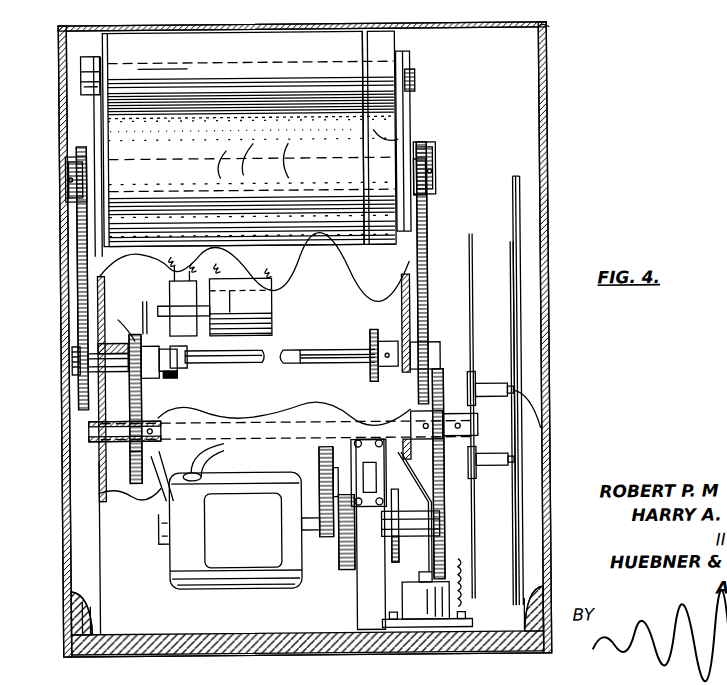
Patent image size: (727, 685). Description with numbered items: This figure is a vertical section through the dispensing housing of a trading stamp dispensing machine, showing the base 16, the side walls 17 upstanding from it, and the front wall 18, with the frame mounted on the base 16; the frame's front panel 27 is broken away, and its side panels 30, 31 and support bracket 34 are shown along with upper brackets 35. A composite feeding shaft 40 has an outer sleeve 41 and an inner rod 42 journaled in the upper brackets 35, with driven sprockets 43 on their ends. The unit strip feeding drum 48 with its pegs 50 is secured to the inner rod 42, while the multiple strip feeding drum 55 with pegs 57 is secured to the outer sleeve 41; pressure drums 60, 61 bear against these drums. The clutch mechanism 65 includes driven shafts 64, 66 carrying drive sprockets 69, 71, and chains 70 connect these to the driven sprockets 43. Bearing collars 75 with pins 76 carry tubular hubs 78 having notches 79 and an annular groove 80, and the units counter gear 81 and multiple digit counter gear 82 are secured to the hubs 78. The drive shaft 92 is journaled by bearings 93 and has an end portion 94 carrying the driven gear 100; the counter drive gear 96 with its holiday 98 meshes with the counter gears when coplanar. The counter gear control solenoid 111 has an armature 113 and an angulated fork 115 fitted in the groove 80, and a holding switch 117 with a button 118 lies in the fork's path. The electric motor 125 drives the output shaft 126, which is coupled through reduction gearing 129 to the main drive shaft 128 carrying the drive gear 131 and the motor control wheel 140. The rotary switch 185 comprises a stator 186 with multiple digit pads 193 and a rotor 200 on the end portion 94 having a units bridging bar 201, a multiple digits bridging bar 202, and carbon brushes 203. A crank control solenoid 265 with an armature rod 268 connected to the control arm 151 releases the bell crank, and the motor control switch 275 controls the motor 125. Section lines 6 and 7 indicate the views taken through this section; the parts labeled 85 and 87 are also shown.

The section line 6 is at (150, 286).
The section line 7 is at (410, 447).
The base 16 is at (158, 638).
The side walls 17 is at (61, 220).
The front wall 18 is at (548, 24).
The front panel 27 is at (119, 547).
The side panel 30 is at (410, 300).
The side panel 31 is at (98, 408).
The support bracket 34 is at (372, 593).
The upper brackets 35 is at (105, 112).
The composite feeding shaft 40 is at (440, 165).
The outer sleeve 41 is at (152, 170).
The inner rod 42 is at (188, 168).
The driven sprockets 43 is at (64, 183).
The unit strip feeding drum 48 is at (400, 112).
The pegs 50 is at (402, 135).
The multiple strip feeding drum 55 is at (115, 134).
The pegs 57 is at (253, 166).
The pressure drum 60 is at (392, 42).
The pressure drum 61 is at (120, 45).
The driven shaft 64 is at (262, 362).
The clutch mechanism 65 is at (128, 320).
The driven shaft 66 is at (305, 350).
The drive sprocket 69 is at (435, 343).
The chains 70 is at (78, 265).
The drive sprocket 71 is at (72, 367).
The bearing collars 75 is at (236, 362).
The pins 76 is at (190, 366).
The tubular hubs 78 is at (148, 333).
The notches 79 is at (172, 372).
The annular groove 80 is at (160, 380).
The units counter gear 81 is at (130, 335).
The multiple digit counter gear 82 is at (199, 47).
The gear 85 is at (372, 330).
The bearing block 87 is at (370, 365).
The drive shaft 92 is at (160, 462).
The bearings 93 is at (412, 415).
The end portion 94 is at (475, 426).
The counter drive gear 96 is at (129, 478).
The holiday 98 is at (137, 397).
The driven gear 100 is at (470, 360).
The counter gear control solenoid 111 is at (272, 292).
The armature 113 is at (207, 292).
The angulated fork 115 is at (190, 447).
The holding switch 117 is at (187, 282).
The button 118 is at (152, 288).
The electric motor 125 is at (230, 530).
The output shaft 126 is at (318, 545).
The main drive shaft 128 is at (440, 530).
The reduction gearing 129 is at (334, 545).
The drive gear 131 is at (430, 508).
The motor control wheel 140 is at (398, 550).
The control arm 151 is at (412, 427).
The rotary switch 185 is at (497, 190).
The stator 186 is at (521, 218).
The multiple digit pads 193 is at (514, 275).
The rotor 200 is at (487, 216).
The units bridging bar 201 is at (500, 468).
The multiple digits bridging bar 202 is at (495, 385).
The carbon brushes 203 is at (540, 395).
The crank control solenoid 265 is at (418, 620).
The armature rod 268 is at (462, 570).
The motor control switch 275 is at (342, 439).